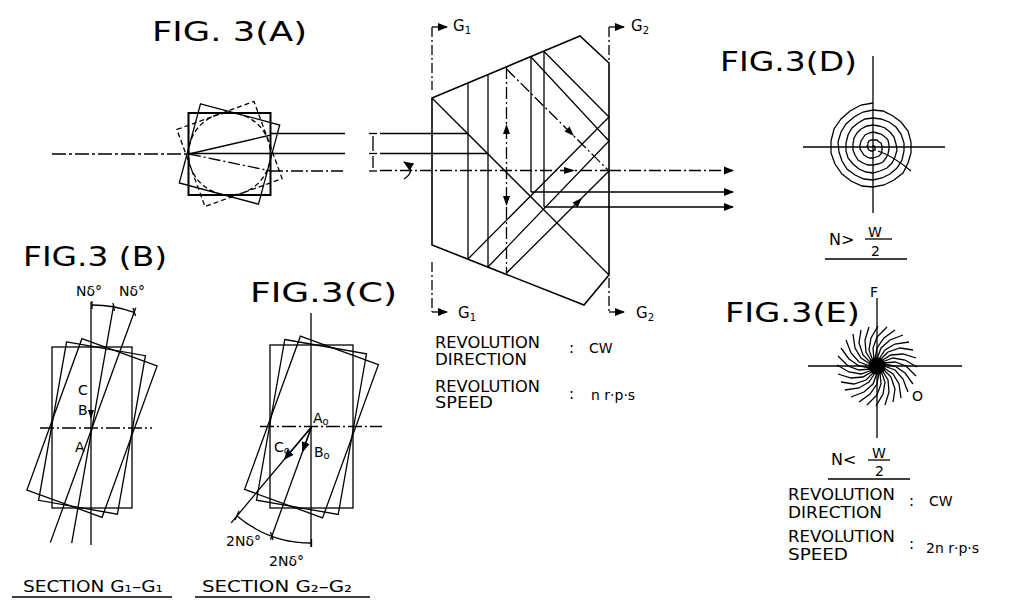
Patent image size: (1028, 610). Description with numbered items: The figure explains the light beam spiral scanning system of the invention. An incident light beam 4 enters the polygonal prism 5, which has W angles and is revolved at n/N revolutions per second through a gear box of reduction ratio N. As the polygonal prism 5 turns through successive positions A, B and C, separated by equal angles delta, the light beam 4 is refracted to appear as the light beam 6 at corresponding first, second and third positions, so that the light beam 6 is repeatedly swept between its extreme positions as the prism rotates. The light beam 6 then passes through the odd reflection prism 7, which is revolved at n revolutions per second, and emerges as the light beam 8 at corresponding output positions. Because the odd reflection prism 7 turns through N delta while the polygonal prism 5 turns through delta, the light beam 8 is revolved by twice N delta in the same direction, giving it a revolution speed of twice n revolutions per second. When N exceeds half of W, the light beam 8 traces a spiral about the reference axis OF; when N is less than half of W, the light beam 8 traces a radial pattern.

In FIG. 3A, the light beam 4 is at (120, 168).
In FIG. 3A, the polygonal prism 5 is at (215, 148).
In FIG. 3A, the light beam 6 is at (399, 176).
In FIG. 3A, the odd reflection prism 7 is at (520, 170).
In FIG. 3A, the light beam 8 is at (643, 198).
In FIG. 3D, the light beam 8 is at (874, 114).